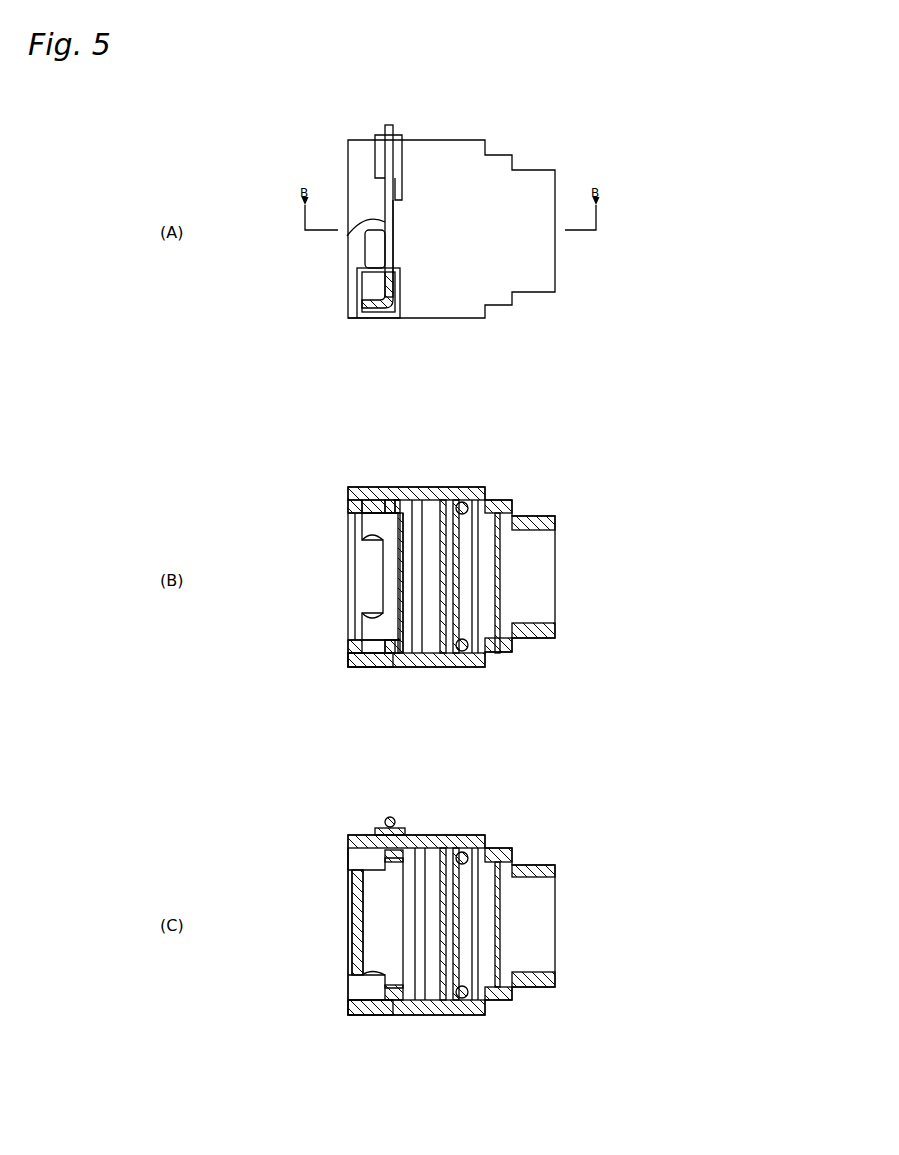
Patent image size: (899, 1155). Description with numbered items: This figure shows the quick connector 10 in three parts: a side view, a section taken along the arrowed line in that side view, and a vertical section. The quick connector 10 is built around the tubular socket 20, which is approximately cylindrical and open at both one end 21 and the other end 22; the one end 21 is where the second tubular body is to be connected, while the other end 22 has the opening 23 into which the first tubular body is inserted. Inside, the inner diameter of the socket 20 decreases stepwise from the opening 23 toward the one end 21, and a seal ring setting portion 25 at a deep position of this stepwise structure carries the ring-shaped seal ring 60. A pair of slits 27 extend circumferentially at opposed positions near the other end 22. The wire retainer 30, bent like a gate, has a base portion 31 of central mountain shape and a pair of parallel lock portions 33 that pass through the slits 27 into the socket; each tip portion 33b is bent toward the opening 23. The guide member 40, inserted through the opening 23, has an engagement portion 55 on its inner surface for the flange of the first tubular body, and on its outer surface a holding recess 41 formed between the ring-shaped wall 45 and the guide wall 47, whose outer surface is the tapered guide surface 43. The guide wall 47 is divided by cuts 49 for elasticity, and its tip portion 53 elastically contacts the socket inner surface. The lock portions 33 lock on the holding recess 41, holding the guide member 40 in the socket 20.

The quick connector 10 is at (443, 136).
The socket 20 is at (470, 322).
The one end 21 is at (534, 294).
The other end 22 is at (350, 320).
The opening 23 is at (348, 660).
The seal ring setting portion 25 is at (453, 667).
The slits 27 is at (350, 233).
The wire retainer 30 is at (389, 120).
The base portion 31 is at (375, 137).
The lock portions 33 is at (385, 197).
The tip portion 33b is at (375, 320).
The guide member 40 is at (374, 586).
The holding recess 41 is at (392, 500).
The tapered guide surface 43 is at (384, 500).
The wall 45 is at (413, 500).
The guide wall 47 is at (388, 500).
The cuts 49 is at (372, 553).
The tip portion 53 is at (356, 500).
The engagement portion 55 is at (355, 538).
The seal ring 60 is at (462, 500).